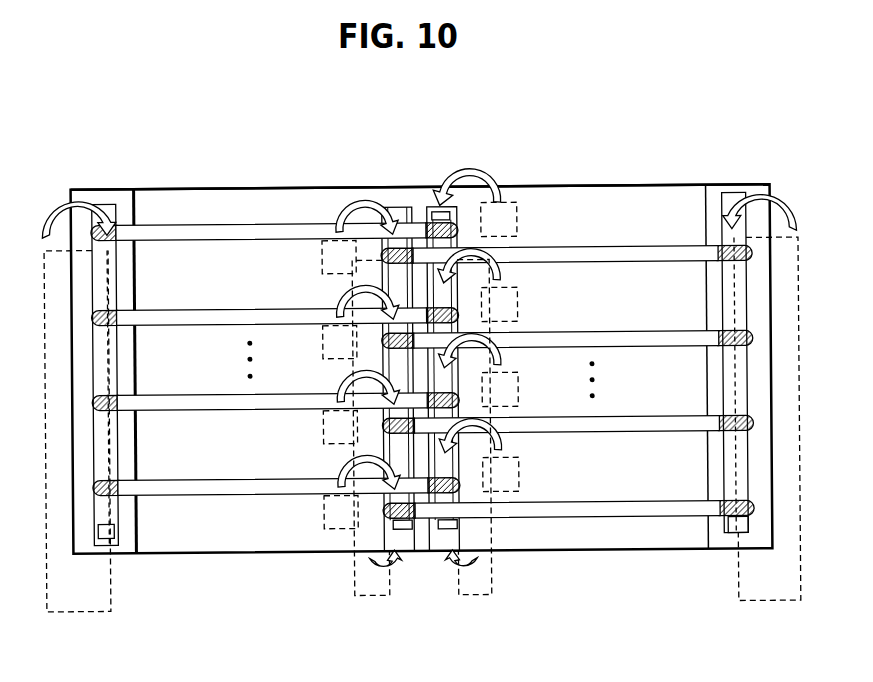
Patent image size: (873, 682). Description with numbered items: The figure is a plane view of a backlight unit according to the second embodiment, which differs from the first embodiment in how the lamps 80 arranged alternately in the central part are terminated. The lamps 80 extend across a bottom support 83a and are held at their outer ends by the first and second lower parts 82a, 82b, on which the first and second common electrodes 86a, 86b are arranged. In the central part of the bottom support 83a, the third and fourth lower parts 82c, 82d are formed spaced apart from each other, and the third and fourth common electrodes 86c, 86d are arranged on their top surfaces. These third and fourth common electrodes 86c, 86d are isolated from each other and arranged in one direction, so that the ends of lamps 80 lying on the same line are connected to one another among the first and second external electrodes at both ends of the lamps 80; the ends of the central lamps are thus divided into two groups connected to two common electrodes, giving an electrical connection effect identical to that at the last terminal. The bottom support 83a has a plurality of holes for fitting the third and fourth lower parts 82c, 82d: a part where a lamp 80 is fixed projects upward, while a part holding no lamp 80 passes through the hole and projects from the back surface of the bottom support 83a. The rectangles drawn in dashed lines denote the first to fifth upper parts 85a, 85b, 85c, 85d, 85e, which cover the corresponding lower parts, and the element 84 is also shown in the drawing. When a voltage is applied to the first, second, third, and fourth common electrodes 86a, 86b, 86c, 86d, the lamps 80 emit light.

The lamp 80 is at (222, 230).
The first lower part 82a is at (130, 551).
The second lower part 82b is at (718, 551).
The third lower part 82c is at (397, 208).
The fourth lower part 82d is at (448, 192).
The bottom support 83a is at (643, 186).
The slat panel 84 is at (583, 197).
The first upper part 85a is at (92, 609).
The second upper part 85b is at (783, 603).
The third upper part 85c is at (372, 595).
The fourth upper part 85d is at (474, 595).
The fifth upper part 85e is at (512, 205).
The first common electrode 86a is at (108, 200).
The second common electrode 86b is at (732, 197).
The third common electrode 86c is at (400, 460).
The fourth common electrode 86d is at (442, 468).